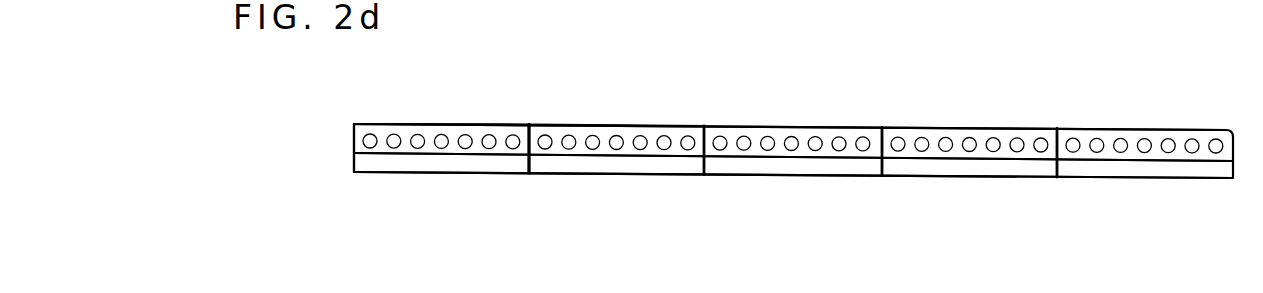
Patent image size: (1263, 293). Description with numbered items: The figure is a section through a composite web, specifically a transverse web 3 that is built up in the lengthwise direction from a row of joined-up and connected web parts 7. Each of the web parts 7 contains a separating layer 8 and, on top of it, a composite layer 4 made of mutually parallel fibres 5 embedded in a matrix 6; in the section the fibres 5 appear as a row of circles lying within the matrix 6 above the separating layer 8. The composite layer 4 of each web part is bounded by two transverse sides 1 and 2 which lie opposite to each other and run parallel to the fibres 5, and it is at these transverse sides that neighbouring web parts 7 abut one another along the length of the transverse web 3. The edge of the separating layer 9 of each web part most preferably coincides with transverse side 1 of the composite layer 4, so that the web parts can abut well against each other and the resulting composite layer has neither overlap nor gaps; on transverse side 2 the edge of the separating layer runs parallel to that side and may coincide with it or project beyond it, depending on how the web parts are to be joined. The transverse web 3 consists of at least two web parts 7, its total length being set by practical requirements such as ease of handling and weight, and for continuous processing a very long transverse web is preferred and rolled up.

The transverse side 1 is at (353, 139).
The transverse side 2 is at (533, 142).
The transverse web 3 is at (795, 110).
The composite layer 4 is at (441, 125).
The fibres 5 is at (593, 136).
The matrix 6 is at (628, 130).
The web parts 7 is at (497, 125).
The separating layer 8 is at (418, 165).
The separating layer edge 9 is at (353, 160).